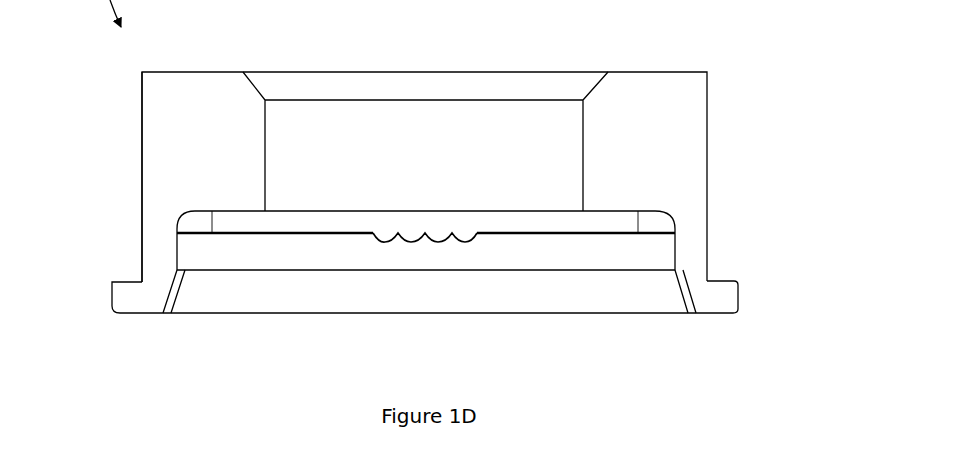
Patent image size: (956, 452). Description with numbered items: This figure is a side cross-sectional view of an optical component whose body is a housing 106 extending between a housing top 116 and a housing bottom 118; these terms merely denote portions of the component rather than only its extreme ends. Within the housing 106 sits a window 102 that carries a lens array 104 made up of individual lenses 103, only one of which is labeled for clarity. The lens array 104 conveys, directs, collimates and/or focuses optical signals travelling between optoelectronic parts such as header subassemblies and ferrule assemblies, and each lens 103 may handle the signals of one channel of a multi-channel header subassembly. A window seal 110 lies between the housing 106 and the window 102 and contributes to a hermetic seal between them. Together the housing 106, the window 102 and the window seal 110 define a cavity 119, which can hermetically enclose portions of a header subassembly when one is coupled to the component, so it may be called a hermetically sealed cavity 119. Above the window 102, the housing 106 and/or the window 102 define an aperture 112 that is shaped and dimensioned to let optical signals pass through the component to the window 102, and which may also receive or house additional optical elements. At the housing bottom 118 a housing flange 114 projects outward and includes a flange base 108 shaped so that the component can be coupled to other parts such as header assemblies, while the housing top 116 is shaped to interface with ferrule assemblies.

The window 102 is at (324, 222).
The lens 103 is at (465, 237).
The lens array 104 is at (426, 250).
The housing 106 is at (662, 72).
The flange base 108 is at (132, 316).
The window seal 110 is at (199, 222).
The aperture 112 is at (413, 126).
The housing flange 114 is at (722, 300).
The housing top 116 is at (134, 86).
The housing bottom 118 is at (105, 296).
The cavity 119 is at (358, 285).